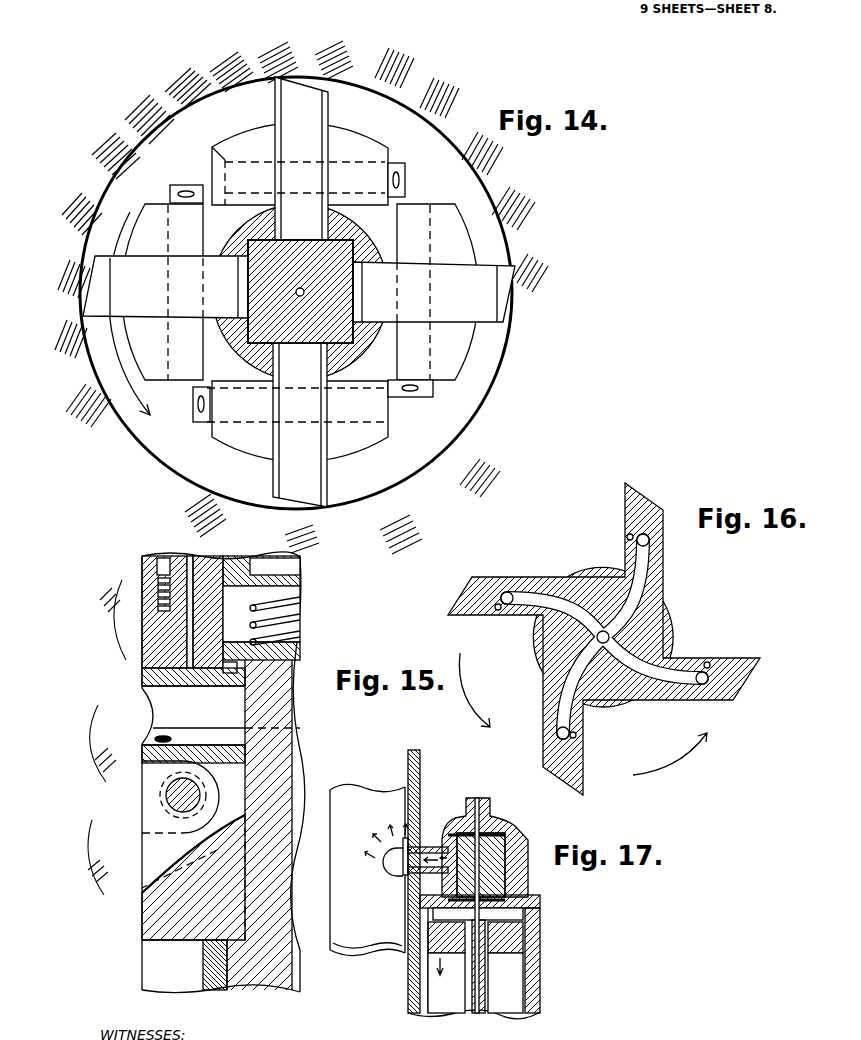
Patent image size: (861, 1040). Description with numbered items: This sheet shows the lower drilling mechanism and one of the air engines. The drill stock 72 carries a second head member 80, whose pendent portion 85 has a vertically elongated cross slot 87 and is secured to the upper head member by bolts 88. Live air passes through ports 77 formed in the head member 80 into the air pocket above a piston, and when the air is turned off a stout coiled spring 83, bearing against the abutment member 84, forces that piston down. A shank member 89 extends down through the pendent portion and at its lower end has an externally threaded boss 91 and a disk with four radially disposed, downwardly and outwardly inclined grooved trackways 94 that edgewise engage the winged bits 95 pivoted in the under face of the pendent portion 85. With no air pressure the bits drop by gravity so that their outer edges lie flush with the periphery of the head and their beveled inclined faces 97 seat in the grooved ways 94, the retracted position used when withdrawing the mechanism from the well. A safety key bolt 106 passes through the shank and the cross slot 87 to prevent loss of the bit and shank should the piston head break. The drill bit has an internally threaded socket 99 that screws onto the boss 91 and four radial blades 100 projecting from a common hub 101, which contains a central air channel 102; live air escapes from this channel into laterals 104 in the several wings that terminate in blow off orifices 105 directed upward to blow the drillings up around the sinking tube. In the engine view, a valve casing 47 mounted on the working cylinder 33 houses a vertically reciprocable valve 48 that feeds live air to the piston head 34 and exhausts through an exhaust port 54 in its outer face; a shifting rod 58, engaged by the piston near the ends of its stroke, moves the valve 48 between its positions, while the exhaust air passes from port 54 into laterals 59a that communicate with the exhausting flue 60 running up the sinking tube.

In FIG. 17, the working cylinder 33 is at (419, 994).
In FIG. 17, the head 34 is at (537, 950).
In FIG. 17, the valve casing 47 is at (516, 850).
In FIG. 17, the valve 48 is at (488, 877).
In FIG. 17, the exhaust port 54 is at (445, 848).
In FIG. 17, the shifting rod 58 is at (478, 990).
In FIG. 17, the laterals 59a is at (374, 860).
In FIG. 17, the exhausting pipe or flue 60 is at (389, 942).
In FIG. 15, the drill stock 72 is at (157, 562).
In FIG. 15, the ports 77 is at (190, 675).
In FIG. 15, the second head member 80 is at (160, 648).
In FIG. 15, the coiled spring 83 is at (297, 636).
In FIG. 15, the abutment member 84 is at (282, 572).
In FIG. 14, the pendent portion 85 is at (396, 405).
In FIG. 15, the pendent portion 85 is at (160, 750).
In FIG. 15, the cross slot 87 is at (193, 715).
In FIG. 15, the bolts 88 is at (157, 595).
In FIG. 14, the shank member 89 is at (262, 288).
In FIG. 15, the shank member 89 is at (323, 642).
In FIG. 15, the externally threaded boss 91 is at (250, 985).
In FIG. 14, the grooved trackways 94 is at (321, 356).
In FIG. 15, the grooved trackways 94 is at (163, 893).
In FIG. 14, the winged bits 95 is at (316, 292).
In FIG. 15, the winged bits 95 is at (180, 813).
In FIG. 15, the inclined faces 97 is at (148, 890).
In FIG. 15, the internally threaded socket 99 is at (210, 974).
In FIG. 16, the radial blades 100 is at (733, 683).
In FIG. 16, the hub 101 is at (607, 688).
In FIG. 16, the air channel 102 is at (603, 631).
In FIG. 16, the laterals 104 is at (565, 700).
In FIG. 16, the blow off orifices 105 is at (710, 668).
In FIG. 15, the safety key bolt 106 is at (226, 726).